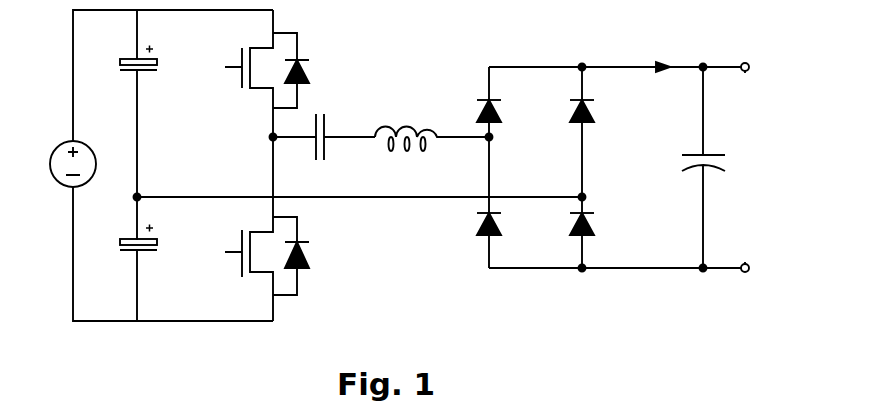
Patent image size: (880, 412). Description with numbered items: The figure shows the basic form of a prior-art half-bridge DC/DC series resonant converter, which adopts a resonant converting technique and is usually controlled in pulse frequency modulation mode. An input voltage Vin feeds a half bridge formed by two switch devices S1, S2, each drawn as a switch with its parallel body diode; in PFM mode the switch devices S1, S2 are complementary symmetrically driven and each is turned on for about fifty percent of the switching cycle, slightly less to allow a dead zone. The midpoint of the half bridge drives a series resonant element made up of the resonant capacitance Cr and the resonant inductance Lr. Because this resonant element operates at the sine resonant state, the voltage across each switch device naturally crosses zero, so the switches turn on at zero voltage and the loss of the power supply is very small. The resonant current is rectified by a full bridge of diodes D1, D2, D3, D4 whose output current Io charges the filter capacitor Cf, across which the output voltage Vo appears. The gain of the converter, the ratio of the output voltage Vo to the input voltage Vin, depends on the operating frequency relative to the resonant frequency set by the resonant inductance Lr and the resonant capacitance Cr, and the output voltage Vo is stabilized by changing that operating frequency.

The input voltage Vin is at (56, 148).
The switch device S1 is at (253, 73).
The switch device S2 is at (253, 229).
The resonant capacitance Cr is at (324, 128).
The resonant inductance Lr is at (432, 123).
The diode D1 is at (507, 112).
The diode D2 is at (507, 224).
The diode D3 is at (602, 112).
The diode D4 is at (602, 224).
The output current Io is at (652, 45).
The filter capacitor Cf is at (691, 167).
The output voltage Vo is at (753, 167).